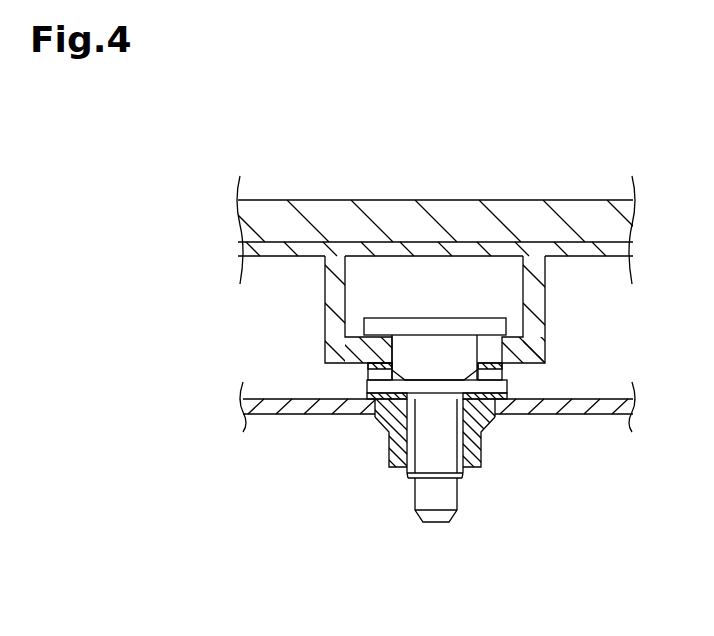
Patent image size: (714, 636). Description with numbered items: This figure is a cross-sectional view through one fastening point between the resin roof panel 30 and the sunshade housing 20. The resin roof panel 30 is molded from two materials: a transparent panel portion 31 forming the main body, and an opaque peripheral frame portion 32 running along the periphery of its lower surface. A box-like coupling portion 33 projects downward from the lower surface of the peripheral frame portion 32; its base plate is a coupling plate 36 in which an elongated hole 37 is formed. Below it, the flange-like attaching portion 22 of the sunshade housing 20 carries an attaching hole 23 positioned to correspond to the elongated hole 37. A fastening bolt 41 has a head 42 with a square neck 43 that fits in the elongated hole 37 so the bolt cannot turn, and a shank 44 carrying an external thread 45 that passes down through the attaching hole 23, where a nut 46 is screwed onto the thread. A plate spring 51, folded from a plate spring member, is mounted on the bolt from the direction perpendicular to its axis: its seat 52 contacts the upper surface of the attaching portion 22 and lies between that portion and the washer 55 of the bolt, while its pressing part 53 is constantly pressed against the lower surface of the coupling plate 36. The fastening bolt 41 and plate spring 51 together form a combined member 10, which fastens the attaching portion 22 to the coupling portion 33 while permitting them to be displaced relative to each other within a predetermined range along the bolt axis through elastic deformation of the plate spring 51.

The combined member 10 is at (430, 530).
The sunshade housing 20 is at (425, 451).
The attaching portion 22 is at (301, 415).
The attaching hole 23 is at (393, 434).
The resin roof panel 30 is at (575, 128).
The panel portion 31 is at (508, 216).
The peripheral frame portion 32 is at (562, 249).
The coupling portion 33 is at (548, 322).
The coupling plate 36 is at (522, 367).
The elongated hole 37 is at (407, 346).
The fastening bolt 41 is at (432, 312).
The head 42 is at (463, 328).
The neck 43 is at (466, 355).
The shank 44 is at (450, 493).
The external thread 45 is at (412, 469).
The nut 46 is at (478, 441).
The plate spring 51 is at (372, 417).
The seat 52 is at (497, 416).
The pressing part 53 is at (372, 362).
The washer 55 is at (368, 392).